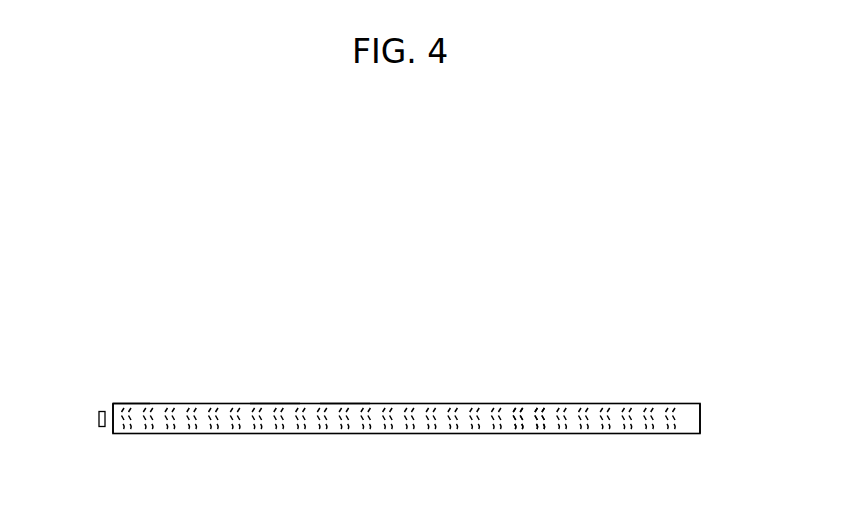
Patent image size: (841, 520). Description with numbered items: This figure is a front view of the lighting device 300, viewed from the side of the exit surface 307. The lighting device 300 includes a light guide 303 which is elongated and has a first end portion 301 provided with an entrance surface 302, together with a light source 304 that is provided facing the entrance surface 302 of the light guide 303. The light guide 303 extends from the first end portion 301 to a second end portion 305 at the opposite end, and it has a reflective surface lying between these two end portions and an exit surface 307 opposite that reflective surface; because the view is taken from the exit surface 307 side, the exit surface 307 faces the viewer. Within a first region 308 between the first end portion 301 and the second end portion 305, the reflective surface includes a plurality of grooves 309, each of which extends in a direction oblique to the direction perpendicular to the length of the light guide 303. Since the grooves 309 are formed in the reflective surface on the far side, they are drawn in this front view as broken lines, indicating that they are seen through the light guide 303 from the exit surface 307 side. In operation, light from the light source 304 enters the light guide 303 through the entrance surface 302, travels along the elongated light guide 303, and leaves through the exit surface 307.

The lighting device 300 is at (643, 314).
The first end portion 301 is at (119, 404).
The entrance surface 302 is at (113, 406).
The light guide 303 is at (339, 404).
The light source 304 is at (100, 428).
The second end portion 305 is at (693, 410).
The exit surface 307 is at (532, 410).
The first region 308 is at (273, 404).
The grooves 309 is at (178, 418).